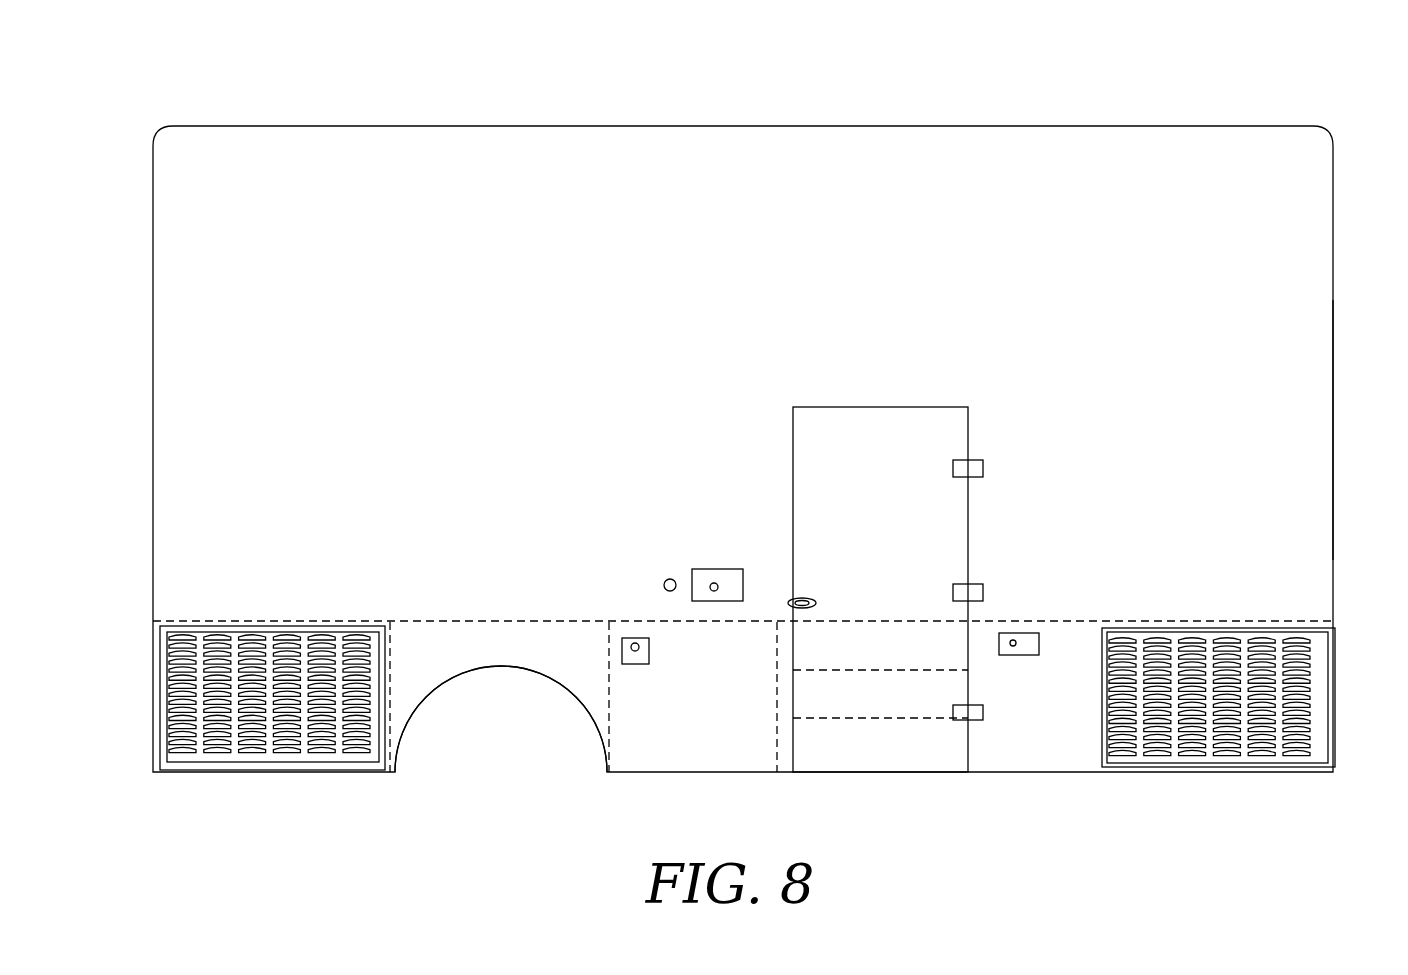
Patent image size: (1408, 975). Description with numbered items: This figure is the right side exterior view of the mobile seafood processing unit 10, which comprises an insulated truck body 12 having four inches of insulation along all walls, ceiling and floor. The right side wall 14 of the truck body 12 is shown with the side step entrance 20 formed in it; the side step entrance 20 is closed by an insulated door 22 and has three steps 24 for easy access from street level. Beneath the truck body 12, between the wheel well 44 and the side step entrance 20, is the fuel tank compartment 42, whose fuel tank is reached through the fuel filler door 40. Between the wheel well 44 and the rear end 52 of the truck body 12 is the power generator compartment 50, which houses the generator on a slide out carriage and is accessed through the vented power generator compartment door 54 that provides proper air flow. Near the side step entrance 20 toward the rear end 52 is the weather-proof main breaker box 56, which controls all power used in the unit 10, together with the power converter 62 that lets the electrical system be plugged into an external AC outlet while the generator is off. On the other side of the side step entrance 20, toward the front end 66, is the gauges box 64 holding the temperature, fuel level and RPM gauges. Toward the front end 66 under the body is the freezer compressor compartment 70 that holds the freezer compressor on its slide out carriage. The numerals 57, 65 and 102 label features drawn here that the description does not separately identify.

The mobile seafood processing unit 10 is at (743, 396).
The insulated truck body 12 is at (1125, 148).
The right side wall 14 is at (384, 343).
The side step entrance 20 is at (885, 557).
The insulated door 22 is at (853, 521).
The steps 24 is at (853, 661).
The fuel filler door 40 is at (630, 636).
The fuel tank compartment 42 is at (680, 709).
The wheel well 44 is at (548, 718).
The power generator compartment 50 is at (230, 663).
The rear end 52 is at (152, 692).
The power generator compartment door 54 is at (200, 632).
The main breaker box 56 is at (729, 538).
The control panel indicator 57 is at (735, 572).
The power converter 62 is at (669, 579).
The gauges box 64 is at (1033, 634).
The switch 65 is at (1030, 645).
The front end 66 is at (1335, 323).
The freezer compressor compartment 70 is at (1251, 663).
The right louvered grille 102 is at (1115, 638).